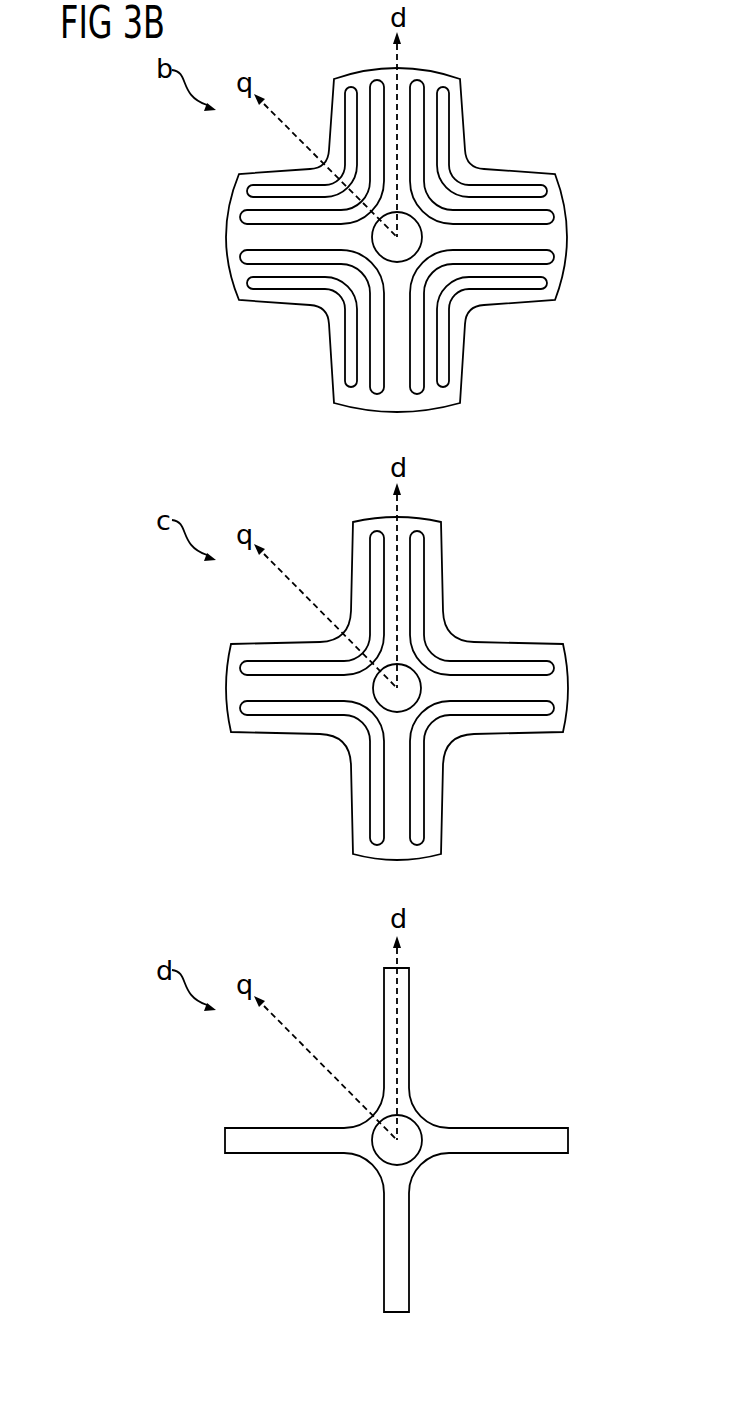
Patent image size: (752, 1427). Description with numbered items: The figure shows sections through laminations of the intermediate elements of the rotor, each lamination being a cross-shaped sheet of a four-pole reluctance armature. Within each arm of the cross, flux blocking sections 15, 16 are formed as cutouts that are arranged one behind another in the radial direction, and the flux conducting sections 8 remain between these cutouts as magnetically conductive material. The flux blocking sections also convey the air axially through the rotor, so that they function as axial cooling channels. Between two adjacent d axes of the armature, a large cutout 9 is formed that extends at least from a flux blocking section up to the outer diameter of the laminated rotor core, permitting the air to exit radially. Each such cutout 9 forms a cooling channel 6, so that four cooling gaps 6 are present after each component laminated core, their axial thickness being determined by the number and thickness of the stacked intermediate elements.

The cooling channel 6 is at (499, 117).
The flux conducting section 8 is at (367, 97).
The cutout 9 is at (307, 116).
The flux blocking section 15 is at (250, 191).
The flux blocking section 16 is at (240, 217).